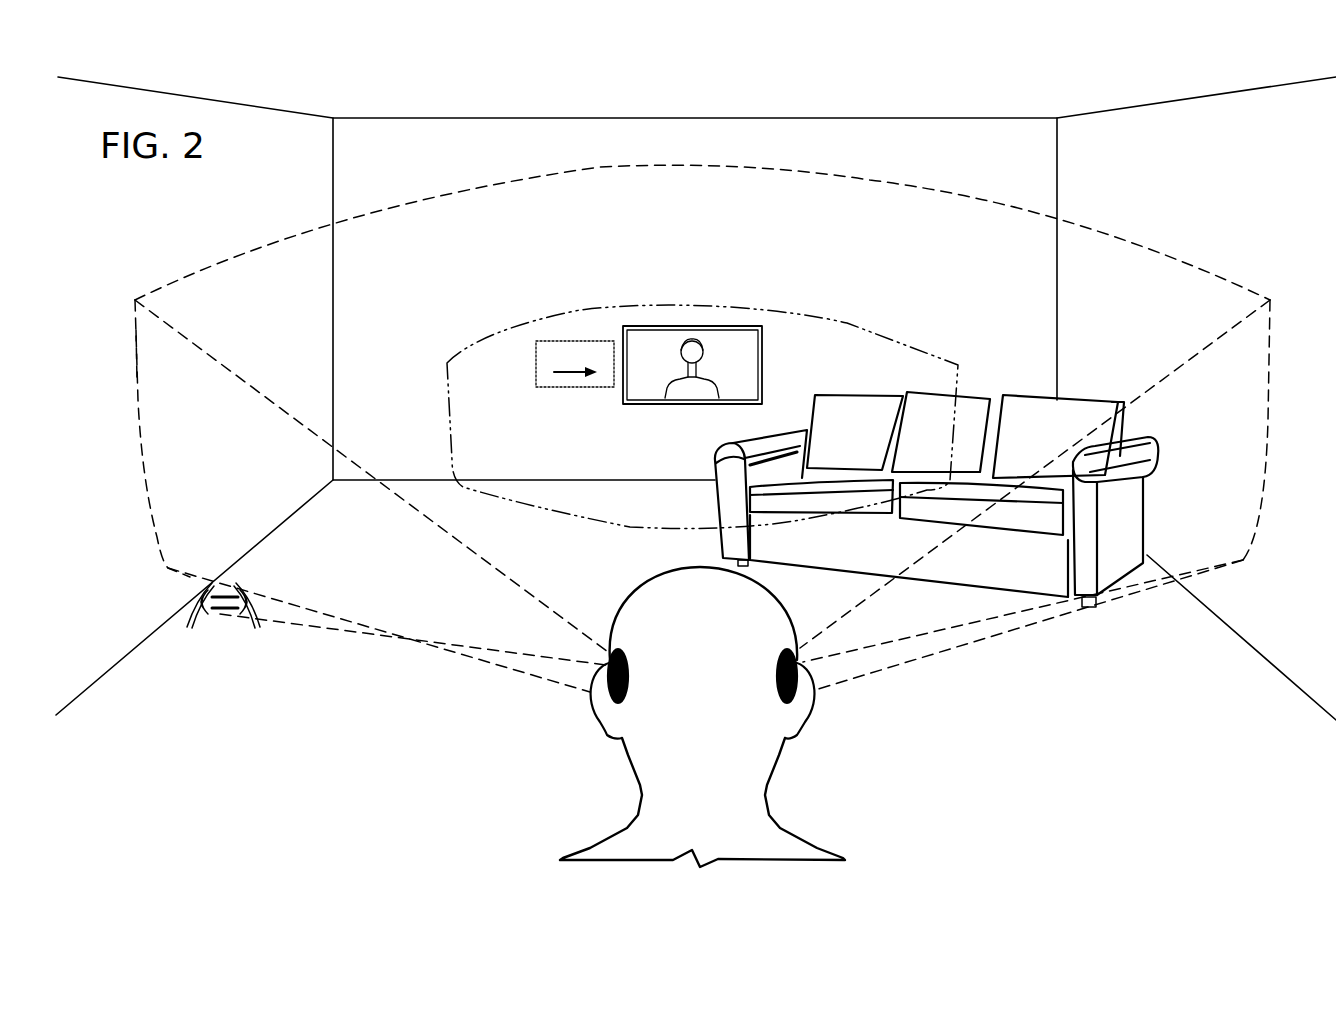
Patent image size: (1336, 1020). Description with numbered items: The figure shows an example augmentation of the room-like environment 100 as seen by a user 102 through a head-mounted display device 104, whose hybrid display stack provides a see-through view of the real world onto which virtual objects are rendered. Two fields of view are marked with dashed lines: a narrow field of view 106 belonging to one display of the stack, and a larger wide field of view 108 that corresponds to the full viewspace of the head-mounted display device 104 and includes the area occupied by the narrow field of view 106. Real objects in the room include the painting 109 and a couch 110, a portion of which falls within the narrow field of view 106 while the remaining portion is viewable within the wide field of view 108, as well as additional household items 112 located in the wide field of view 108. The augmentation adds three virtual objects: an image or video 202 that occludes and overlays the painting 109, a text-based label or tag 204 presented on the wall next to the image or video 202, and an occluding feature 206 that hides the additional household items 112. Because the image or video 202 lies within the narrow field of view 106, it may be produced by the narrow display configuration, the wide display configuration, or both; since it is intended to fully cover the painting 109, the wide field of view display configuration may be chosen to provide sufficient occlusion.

The environment 100 is at (908, 97).
The user 102 is at (688, 665).
The head-mounted display device 104 is at (617, 704).
The narrow field of view 106 is at (855, 325).
The wide field of view 108 is at (933, 187).
The painting 109 is at (643, 404).
The couch 110 is at (1147, 504).
The additional household items 112 is at (176, 585).
The image or video 202 is at (768, 358).
The text-based label or tag 204 is at (536, 362).
The occluding feature 206 is at (150, 342).